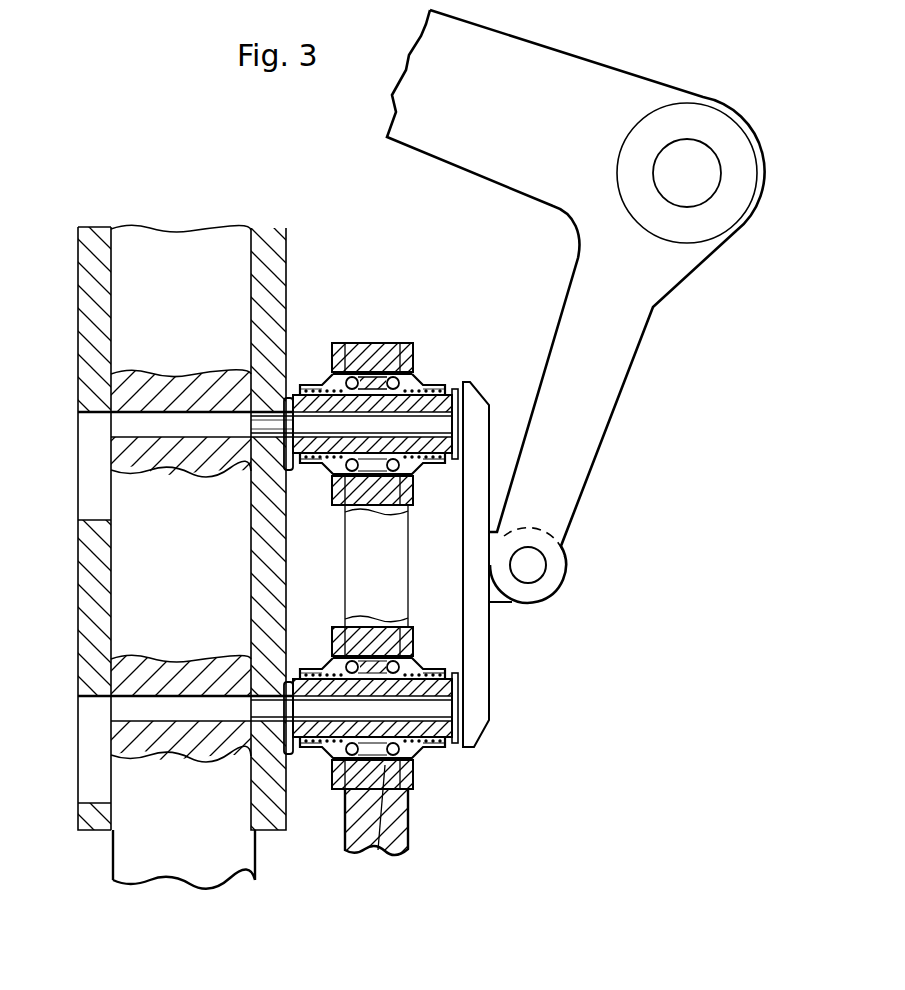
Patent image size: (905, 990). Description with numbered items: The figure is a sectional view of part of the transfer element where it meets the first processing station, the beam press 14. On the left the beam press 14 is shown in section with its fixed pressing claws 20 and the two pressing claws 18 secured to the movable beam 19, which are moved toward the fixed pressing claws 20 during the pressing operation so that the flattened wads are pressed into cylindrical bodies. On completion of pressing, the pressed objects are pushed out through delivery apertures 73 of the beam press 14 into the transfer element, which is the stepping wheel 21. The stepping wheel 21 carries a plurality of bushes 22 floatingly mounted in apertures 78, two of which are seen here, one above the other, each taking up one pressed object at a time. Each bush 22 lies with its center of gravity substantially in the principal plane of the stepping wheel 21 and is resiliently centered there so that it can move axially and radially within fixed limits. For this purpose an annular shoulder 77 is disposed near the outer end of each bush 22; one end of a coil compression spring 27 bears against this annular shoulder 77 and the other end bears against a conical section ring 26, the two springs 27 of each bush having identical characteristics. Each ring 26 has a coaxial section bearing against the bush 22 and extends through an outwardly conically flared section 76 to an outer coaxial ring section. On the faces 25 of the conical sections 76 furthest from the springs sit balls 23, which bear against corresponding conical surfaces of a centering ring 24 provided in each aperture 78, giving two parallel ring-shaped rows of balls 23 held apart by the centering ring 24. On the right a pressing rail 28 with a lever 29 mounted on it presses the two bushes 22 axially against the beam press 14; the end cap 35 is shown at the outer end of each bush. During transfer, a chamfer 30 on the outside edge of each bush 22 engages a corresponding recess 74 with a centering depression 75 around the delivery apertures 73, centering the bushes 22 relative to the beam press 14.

The beam press 14 is at (78, 606).
The pressing claws 18 is at (203, 455).
The movable beam 19 is at (178, 865).
The fixed pressing claws 20 is at (178, 384).
The stepping wheel 21 is at (408, 833).
The bush 22 is at (421, 467).
The balls 23 is at (393, 366).
The centering ring 24 is at (367, 372).
The faces 25 is at (413, 366).
The conical section ring 26 is at (337, 380).
The coil compression spring 27 is at (432, 748).
The pressing rail 28 is at (482, 661).
The lever 29 is at (622, 369).
The chamfer 30 is at (291, 395).
The shaft end cap 35 is at (453, 396).
The delivery apertures 73 is at (283, 452).
The recess 74 is at (252, 736).
The centering depression 75 is at (283, 680).
The conically flared section 76 is at (340, 640).
The annular shoulder 77 is at (319, 667).
The apertures 78 is at (378, 850).